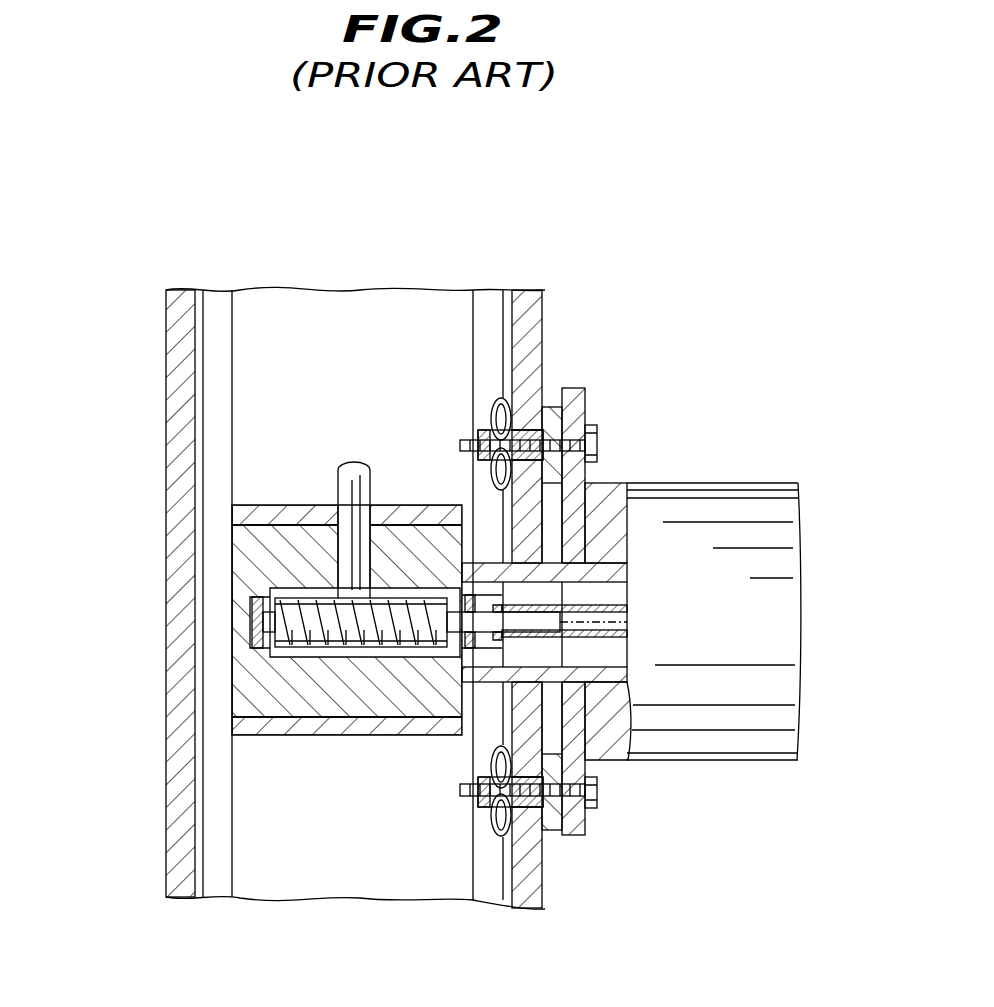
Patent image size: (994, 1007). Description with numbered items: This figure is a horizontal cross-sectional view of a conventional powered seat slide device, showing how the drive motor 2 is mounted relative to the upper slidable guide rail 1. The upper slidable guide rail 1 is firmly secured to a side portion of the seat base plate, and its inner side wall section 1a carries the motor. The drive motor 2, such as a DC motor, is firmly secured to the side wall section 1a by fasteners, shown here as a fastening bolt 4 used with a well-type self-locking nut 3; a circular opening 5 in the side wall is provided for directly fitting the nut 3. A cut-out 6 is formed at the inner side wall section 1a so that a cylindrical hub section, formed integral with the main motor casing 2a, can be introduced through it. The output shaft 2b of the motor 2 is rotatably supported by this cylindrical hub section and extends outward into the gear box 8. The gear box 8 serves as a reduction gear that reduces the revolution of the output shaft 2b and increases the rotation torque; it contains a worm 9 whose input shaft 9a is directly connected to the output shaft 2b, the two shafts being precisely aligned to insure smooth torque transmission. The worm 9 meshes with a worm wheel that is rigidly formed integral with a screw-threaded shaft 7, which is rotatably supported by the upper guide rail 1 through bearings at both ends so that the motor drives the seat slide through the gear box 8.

The upper slidable guide rail 1 is at (168, 334).
The side wall section 1a is at (528, 320).
The drive motor 2 is at (735, 505).
The main motor casing 2a is at (600, 752).
The output shaft 2b is at (530, 637).
The well-type self-locking nut 3 is at (507, 420).
The fastening bolt 4 is at (598, 438).
The circular opening 5 is at (528, 428).
The cut-out 6 is at (545, 557).
The screw-threaded shaft 7 is at (352, 470).
The gear box 8 is at (268, 690).
The worm 9 is at (250, 642).
The input shaft 9a is at (465, 650).